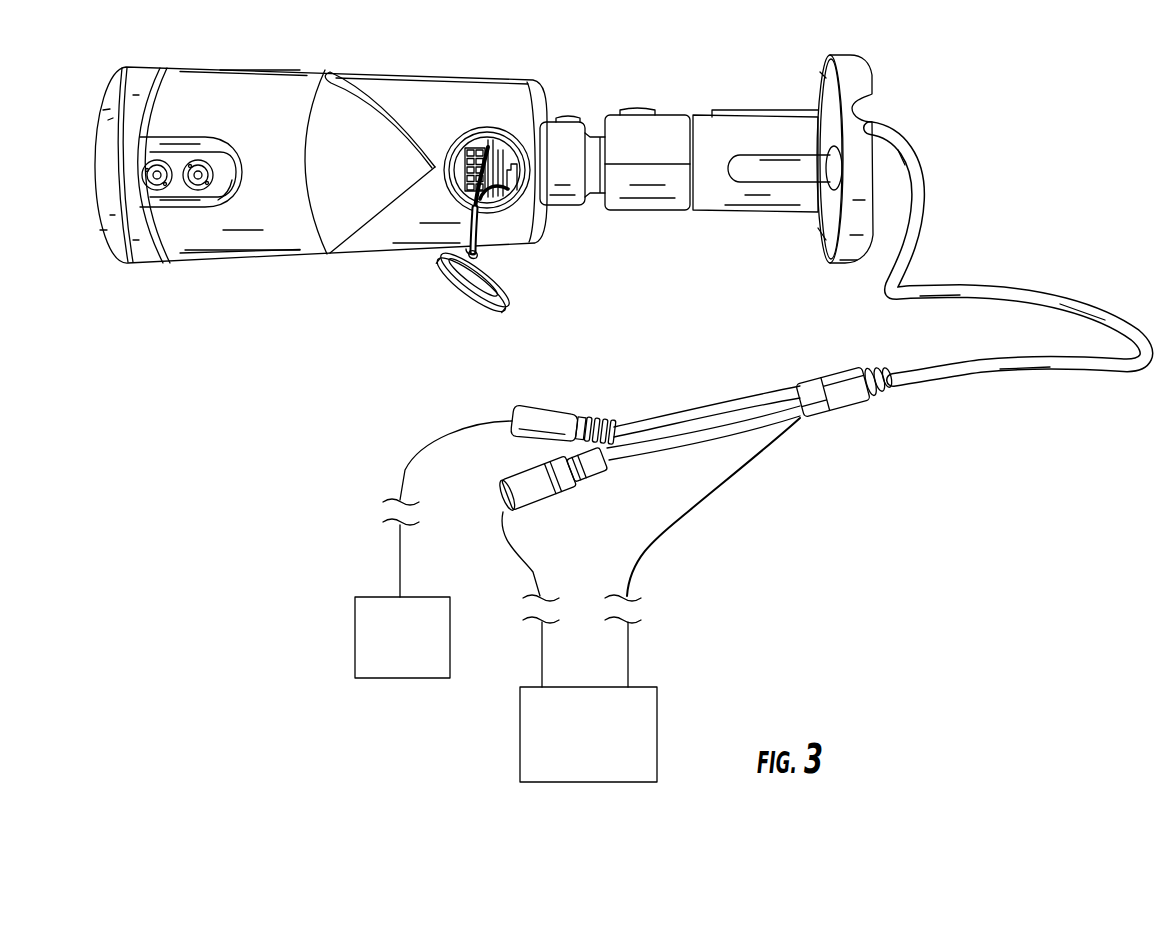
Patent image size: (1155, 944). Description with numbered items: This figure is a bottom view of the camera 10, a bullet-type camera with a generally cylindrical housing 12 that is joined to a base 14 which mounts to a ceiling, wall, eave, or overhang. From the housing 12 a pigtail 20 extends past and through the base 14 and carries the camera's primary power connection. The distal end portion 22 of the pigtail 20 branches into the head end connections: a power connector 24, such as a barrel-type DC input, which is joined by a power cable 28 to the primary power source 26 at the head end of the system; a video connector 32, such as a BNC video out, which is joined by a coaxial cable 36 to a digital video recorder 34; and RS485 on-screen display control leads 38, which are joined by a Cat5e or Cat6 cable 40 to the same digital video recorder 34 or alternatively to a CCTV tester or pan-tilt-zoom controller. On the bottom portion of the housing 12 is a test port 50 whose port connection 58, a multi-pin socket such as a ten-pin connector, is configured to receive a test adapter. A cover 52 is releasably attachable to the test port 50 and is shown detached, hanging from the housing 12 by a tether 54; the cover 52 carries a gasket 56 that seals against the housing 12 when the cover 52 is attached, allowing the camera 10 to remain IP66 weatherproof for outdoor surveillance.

The camera 10 is at (462, 56).
The housing 12 is at (228, 258).
The base 14 is at (851, 62).
The pigtail 20 is at (992, 290).
The distal end portion 22 is at (830, 443).
The power connector 24 is at (528, 402).
The primary power source 26 is at (415, 664).
The power cable 28 is at (397, 571).
The video connector 32 is at (566, 503).
The digital video recorder 34 is at (577, 758).
The cable 36 is at (541, 639).
The RS485 on-screen display control leads 38 is at (693, 510).
The cable 40 is at (628, 650).
The test port 50 is at (473, 116).
The cover 52 is at (470, 308).
The tether 54 is at (473, 237).
The gasket 56 is at (442, 257).
The port connection 58 is at (488, 147).